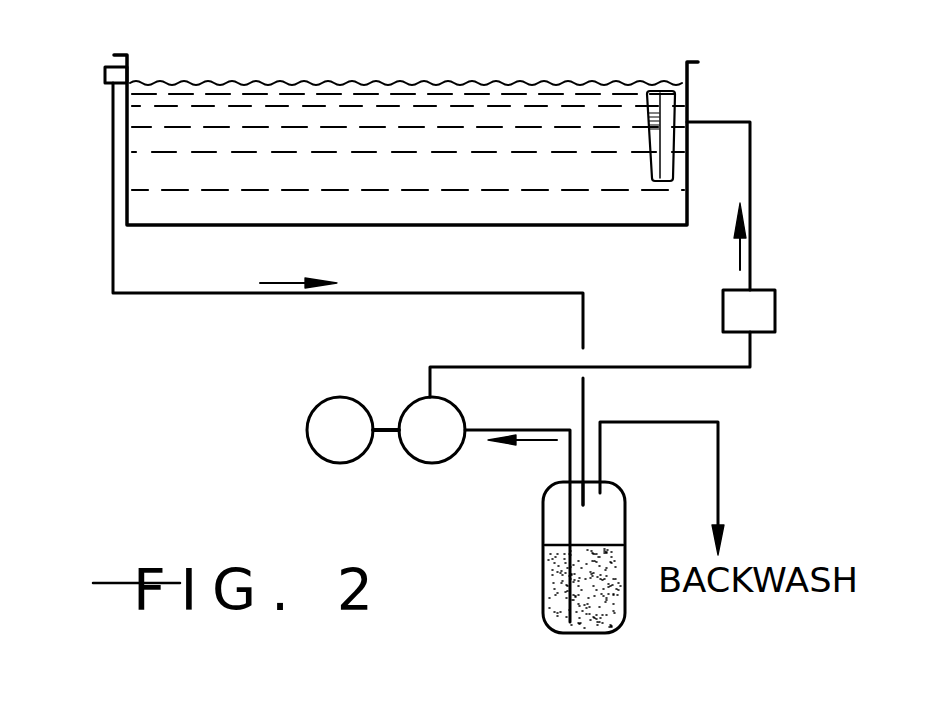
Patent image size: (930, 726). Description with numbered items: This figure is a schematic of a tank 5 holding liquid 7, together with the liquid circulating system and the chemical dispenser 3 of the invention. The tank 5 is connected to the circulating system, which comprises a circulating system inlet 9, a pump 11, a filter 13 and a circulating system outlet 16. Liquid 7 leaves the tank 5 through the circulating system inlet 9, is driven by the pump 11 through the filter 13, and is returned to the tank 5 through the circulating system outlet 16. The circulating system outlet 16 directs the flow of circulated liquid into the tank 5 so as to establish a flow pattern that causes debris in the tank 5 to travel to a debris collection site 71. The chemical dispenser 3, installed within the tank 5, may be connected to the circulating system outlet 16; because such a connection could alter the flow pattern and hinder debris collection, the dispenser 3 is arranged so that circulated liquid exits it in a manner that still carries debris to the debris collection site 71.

The chemical dispenser 3 is at (636, 159).
The tank 5 is at (623, 227).
The liquid 7 is at (377, 82).
The circulating system inlet 9 is at (104, 96).
The pump 11 is at (417, 463).
The filter 13 is at (777, 298).
The circulating system outlet 16 is at (707, 113).
The debris collection site 71 is at (105, 72).